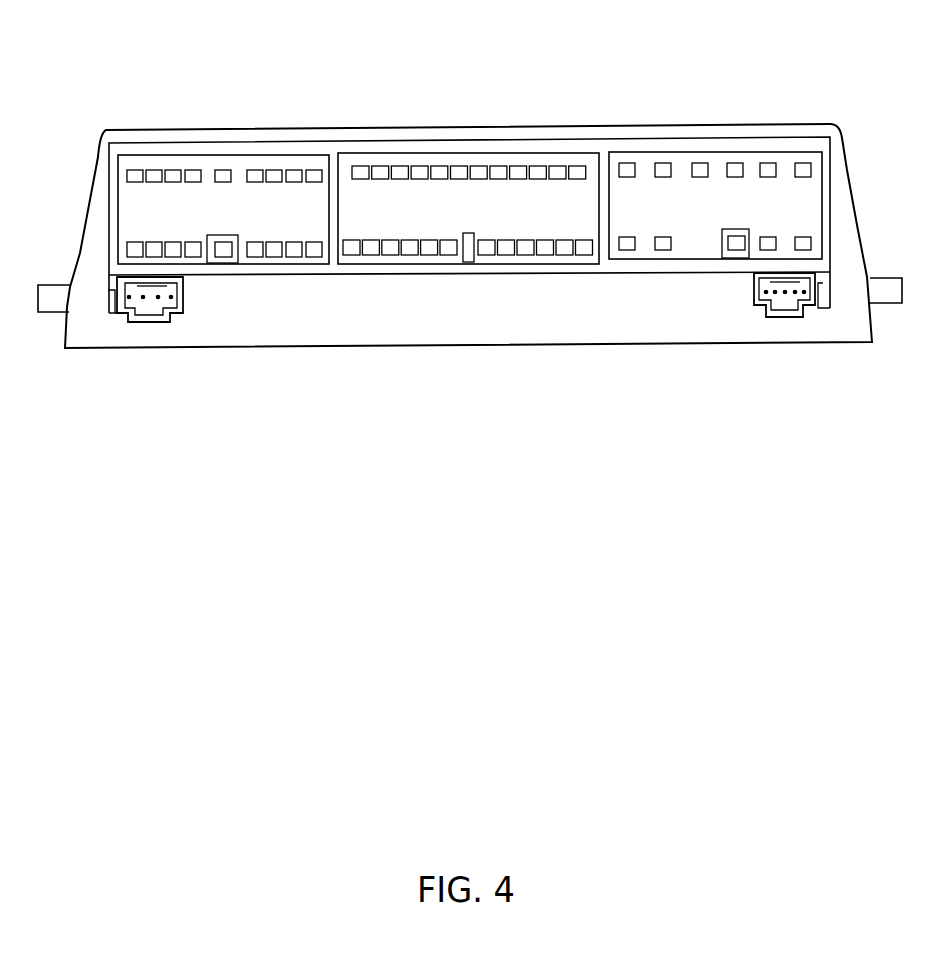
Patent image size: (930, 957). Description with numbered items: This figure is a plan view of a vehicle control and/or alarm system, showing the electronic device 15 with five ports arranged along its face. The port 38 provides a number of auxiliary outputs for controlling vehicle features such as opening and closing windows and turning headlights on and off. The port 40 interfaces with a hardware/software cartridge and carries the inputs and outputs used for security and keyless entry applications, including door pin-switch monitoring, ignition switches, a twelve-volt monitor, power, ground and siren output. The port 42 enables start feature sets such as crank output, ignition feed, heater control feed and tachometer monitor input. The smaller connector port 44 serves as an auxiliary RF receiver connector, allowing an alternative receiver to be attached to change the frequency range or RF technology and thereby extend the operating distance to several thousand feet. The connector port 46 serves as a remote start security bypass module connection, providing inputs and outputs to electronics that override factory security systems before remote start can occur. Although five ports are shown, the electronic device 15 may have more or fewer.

The electronic device 15 is at (143, 130).
The port 38 is at (207, 163).
The port 40 is at (438, 158).
The port 42 is at (683, 158).
The auxiliary RF receiver connector port 44 is at (150, 310).
The remote start security bypass module connection 46 is at (785, 307).